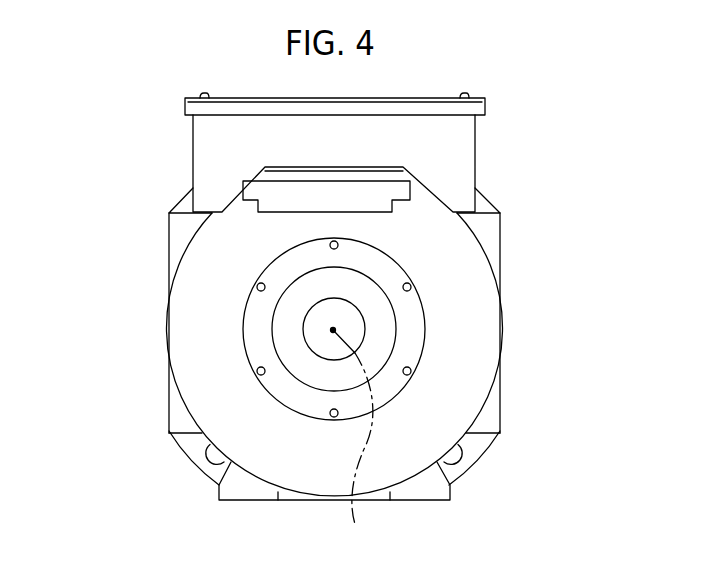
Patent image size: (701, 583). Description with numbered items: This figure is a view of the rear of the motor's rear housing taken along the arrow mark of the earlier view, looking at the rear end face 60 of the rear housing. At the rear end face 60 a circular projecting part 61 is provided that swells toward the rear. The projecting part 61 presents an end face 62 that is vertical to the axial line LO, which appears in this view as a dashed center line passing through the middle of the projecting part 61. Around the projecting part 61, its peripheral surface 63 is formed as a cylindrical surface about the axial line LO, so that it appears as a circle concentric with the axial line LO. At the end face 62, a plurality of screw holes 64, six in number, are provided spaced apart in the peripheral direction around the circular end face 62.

The rear end face 60 is at (402, 432).
The circular projecting part 61 is at (428, 335).
The end face 62 is at (398, 388).
The peripheral surface 63 is at (423, 305).
The screw holes 64 is at (257, 289).
The axial line LO is at (352, 444).